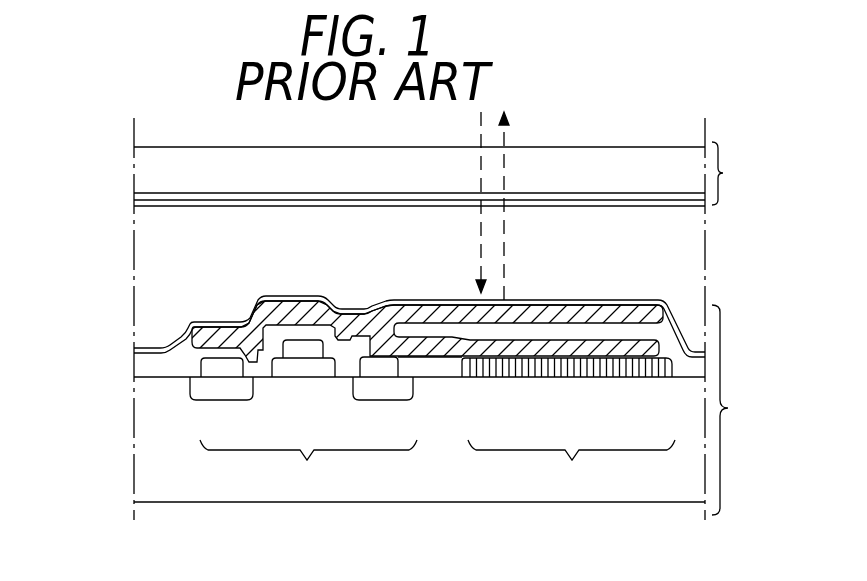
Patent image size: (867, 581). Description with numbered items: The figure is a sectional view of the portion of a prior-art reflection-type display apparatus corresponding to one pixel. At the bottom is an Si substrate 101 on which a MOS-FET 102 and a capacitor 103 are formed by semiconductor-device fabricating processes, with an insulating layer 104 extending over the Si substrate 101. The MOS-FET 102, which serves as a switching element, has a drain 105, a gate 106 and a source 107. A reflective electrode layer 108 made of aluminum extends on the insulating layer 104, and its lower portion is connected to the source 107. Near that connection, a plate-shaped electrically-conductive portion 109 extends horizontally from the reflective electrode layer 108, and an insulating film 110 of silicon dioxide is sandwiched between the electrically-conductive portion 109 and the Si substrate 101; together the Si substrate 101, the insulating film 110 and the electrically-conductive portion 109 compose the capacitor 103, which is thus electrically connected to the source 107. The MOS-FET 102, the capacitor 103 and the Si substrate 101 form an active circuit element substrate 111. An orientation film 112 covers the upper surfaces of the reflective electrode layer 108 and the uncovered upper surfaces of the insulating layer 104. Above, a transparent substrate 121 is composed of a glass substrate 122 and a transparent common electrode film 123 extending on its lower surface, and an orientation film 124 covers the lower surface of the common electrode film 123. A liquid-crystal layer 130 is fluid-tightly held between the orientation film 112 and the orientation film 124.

The Si substrate 101 is at (137, 409).
The MOS-FET 102 is at (309, 462).
The capacitor 103 is at (574, 462).
The insulating layer 104 is at (141, 364).
The drain 105 is at (218, 395).
The gate 106 is at (300, 368).
The source 107 is at (380, 390).
The reflective electrode layer 108 is at (208, 332).
The electrically-conductive portion 109 is at (457, 348).
The insulating film 110 is at (586, 368).
The active circuit element substrate 111 is at (732, 408).
The orientation film 112 is at (668, 302).
The transparent substrate 121 is at (737, 173).
The glass substrate 122 is at (142, 168).
The common electrode film 123 is at (147, 196).
The orientation film 124 is at (663, 206).
The liquid-crystal layer 130 is at (663, 257).